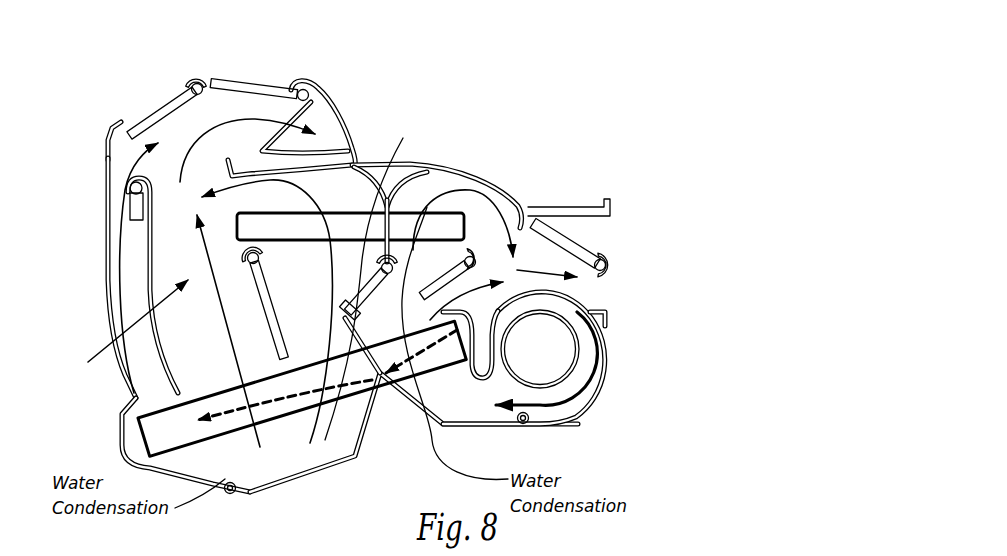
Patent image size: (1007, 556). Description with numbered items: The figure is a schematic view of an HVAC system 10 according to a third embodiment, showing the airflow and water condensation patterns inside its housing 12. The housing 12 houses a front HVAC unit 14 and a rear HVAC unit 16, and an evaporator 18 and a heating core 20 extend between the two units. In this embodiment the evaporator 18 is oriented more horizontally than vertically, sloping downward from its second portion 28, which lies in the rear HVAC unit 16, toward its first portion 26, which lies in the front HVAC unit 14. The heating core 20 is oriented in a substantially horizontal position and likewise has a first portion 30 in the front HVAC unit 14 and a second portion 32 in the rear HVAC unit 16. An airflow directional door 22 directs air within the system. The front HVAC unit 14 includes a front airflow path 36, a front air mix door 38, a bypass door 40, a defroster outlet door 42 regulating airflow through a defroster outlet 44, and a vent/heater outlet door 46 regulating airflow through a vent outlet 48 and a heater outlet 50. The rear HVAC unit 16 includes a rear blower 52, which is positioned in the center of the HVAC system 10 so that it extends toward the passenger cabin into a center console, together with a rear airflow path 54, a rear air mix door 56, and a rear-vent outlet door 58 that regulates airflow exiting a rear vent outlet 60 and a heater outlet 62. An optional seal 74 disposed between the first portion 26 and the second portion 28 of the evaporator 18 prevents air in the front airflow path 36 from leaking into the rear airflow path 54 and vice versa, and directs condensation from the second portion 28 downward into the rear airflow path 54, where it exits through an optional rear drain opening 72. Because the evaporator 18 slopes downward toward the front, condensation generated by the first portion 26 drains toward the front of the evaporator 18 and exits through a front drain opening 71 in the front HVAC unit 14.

The HVAC system 10 is at (112, 60).
The housing 12 is at (112, 300).
The front HVAC unit 14 is at (100, 163).
The rear HVAC unit 16 is at (588, 182).
The evaporator 18 is at (280, 418).
The heating core 20 is at (350, 282).
The airflow directional door 22 is at (389, 212).
The first portion of the evaporator 26 is at (165, 466).
The second portion of the evaporator 28 is at (442, 408).
The first portion of the heating core 30 is at (338, 185).
The second portion of the heating core 32 is at (452, 213).
The front airflow path 36 is at (162, 295).
The front air mix door 38 is at (257, 347).
The bypass door 40 is at (130, 203).
The defroster outlet door 42 is at (148, 115).
The defroster outlet 44 is at (164, 85).
The vent/heater outlet door 46 is at (255, 80).
The vent outlet 48 is at (233, 57).
The heater outlet 50 is at (328, 126).
The rear blower 52 is at (612, 357).
The rear airflow path 54 is at (480, 413).
The rear air mix door 56 is at (480, 206).
The rear-vent outlet door 58 is at (590, 241).
The rear vent outlet 60 is at (613, 289).
The heater outlet 62 is at (609, 227).
The front drain opening 71 is at (230, 496).
The rear drain opening 72 is at (530, 420).
The seal 74 is at (345, 440).